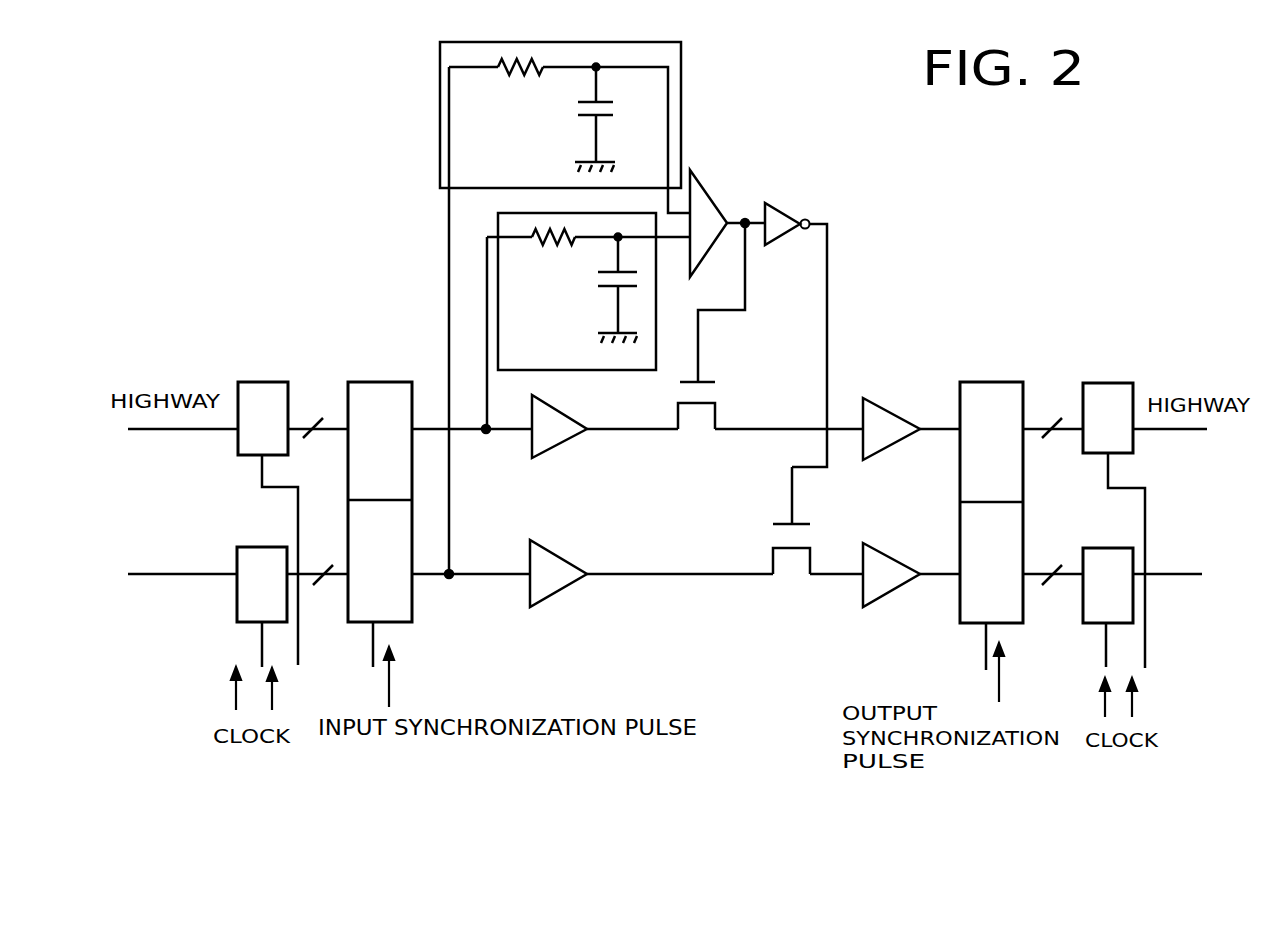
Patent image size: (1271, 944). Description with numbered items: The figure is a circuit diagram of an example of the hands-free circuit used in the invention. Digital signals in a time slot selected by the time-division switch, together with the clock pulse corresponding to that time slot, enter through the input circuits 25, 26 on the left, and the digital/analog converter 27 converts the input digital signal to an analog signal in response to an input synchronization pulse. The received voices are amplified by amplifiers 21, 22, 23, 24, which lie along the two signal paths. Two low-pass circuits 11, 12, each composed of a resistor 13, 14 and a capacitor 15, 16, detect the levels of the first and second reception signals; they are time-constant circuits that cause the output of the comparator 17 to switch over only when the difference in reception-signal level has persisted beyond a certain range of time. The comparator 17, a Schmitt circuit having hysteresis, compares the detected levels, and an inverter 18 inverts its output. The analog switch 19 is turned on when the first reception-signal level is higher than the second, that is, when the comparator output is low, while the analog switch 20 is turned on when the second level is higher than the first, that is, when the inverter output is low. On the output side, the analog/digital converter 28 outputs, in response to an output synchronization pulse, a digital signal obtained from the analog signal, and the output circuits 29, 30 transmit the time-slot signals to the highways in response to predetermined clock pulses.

The low-pass circuit 11 is at (498, 218).
The low-pass circuit 12 is at (681, 58).
The resistor 13 is at (552, 246).
The resistor 14 is at (511, 75).
The capacitor 15 is at (637, 280).
The capacitor 16 is at (612, 108).
The comparator 17 is at (710, 200).
The inverter 18 is at (782, 210).
The analog switch 19 is at (688, 392).
The analog switch 20 is at (773, 540).
The amplifier 21 is at (549, 452).
The amplifier 22 is at (880, 398).
The amplifier 23 is at (563, 554).
The amplifier 24 is at (885, 550).
The input circuit 25 is at (272, 380).
The input circuit 26 is at (253, 547).
The digital/analog converter 27 is at (378, 382).
The analog/digital converter 28 is at (992, 382).
The output circuit 29 is at (1098, 383).
The output circuit 30 is at (1095, 548).